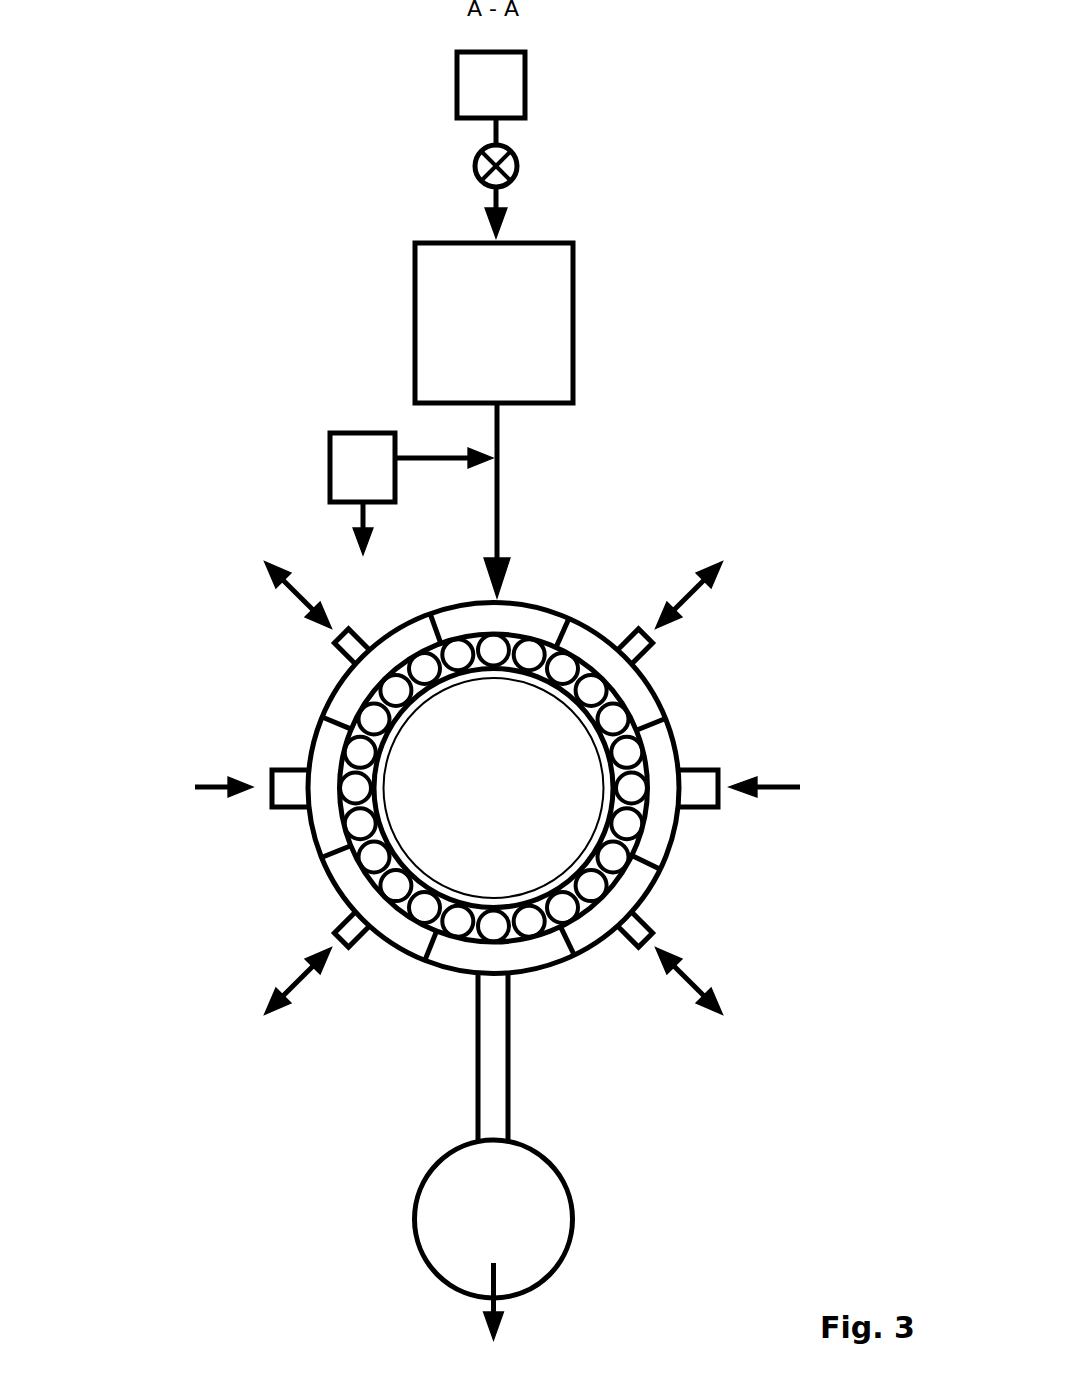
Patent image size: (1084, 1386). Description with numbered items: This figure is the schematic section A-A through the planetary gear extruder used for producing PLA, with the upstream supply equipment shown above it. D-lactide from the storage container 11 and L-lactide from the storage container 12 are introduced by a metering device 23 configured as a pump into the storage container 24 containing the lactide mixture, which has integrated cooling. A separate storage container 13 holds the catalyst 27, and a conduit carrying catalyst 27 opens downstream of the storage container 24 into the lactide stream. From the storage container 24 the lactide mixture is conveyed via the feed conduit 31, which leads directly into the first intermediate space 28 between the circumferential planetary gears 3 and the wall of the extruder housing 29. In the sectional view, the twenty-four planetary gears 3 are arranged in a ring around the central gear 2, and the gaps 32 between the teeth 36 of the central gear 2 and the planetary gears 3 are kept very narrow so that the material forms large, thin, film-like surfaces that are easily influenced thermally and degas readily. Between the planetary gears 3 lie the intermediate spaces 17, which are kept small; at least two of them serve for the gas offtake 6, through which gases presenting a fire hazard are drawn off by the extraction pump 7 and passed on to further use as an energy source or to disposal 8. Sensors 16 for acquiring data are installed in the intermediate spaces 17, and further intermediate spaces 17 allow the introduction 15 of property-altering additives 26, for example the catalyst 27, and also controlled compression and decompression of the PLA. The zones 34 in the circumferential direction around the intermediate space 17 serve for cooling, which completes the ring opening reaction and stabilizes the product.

The central gear 2 is at (410, 795).
The planetary gears 3 is at (618, 715).
The gas offtake 6 is at (513, 1057).
The extraction pump 7 is at (540, 1218).
The further processing or disposal of the gas 8 is at (496, 1319).
The storage container for D-lactide 11 is at (601, 79).
The storage container for L-lactide 12 is at (507, 92).
The storage container for catalyst 13 is at (355, 462).
The introduction of additives 15 is at (292, 787).
The sensors for acquiring data 16 is at (499, 790).
The intermediate space 17 is at (347, 693).
The metering device 23 is at (510, 166).
The storage container containing lactide mixture 24 is at (548, 337).
The additives 26 is at (497, 789).
The catalyst 27 is at (447, 455).
The first intermediate space between gears and housing wall 28 is at (554, 732).
The extruder housing 29 is at (653, 895).
The feed conduit for lactide mixture 31 is at (503, 545).
The gap 32 is at (382, 722).
The zones in circumferential direction 34 is at (500, 832).
The teeth 36 is at (578, 928).